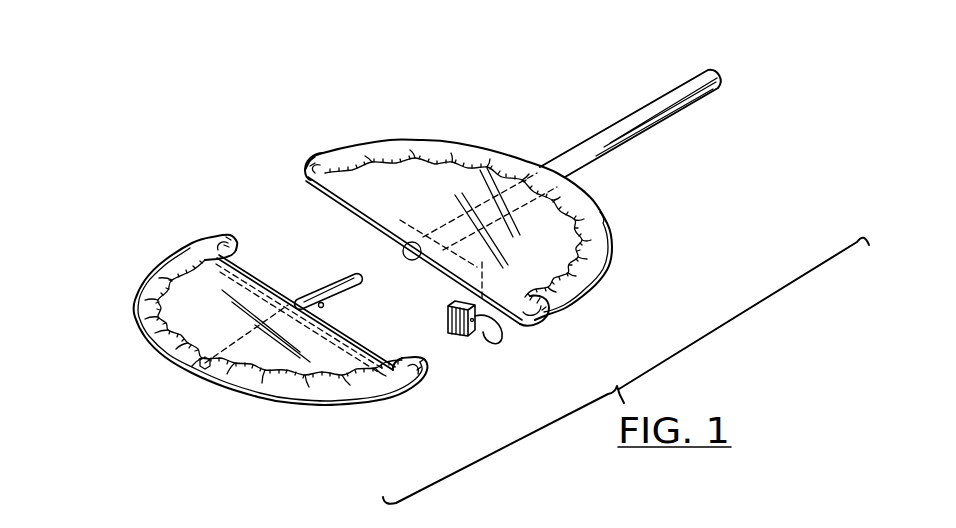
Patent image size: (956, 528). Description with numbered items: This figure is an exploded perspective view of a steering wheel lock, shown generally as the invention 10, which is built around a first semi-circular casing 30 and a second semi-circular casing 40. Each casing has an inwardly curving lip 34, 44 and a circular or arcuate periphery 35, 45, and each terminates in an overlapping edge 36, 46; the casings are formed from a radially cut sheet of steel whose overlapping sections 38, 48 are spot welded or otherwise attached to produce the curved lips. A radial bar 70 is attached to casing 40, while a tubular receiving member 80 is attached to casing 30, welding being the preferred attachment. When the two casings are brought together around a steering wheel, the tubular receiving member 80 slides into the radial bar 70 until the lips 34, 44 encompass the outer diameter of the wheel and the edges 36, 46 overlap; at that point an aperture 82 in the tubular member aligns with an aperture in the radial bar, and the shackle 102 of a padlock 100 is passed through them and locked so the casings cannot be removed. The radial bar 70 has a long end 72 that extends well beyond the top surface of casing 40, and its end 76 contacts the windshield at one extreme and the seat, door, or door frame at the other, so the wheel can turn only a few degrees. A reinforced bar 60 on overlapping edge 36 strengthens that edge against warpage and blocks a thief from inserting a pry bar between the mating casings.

The invention 10 is at (202, 193).
The first semi-circular casing 30 is at (203, 300).
The inwardly curving lip 34 is at (172, 368).
The arcuate periphery 35 is at (213, 390).
The overlapping edge 36 is at (243, 282).
The overlapping section 38 is at (326, 403).
The second semi-circular casing 40 is at (432, 180).
The inwardly curving lip 44 is at (582, 293).
The arcuate periphery 45 is at (474, 147).
The overlapping edge 46 is at (346, 212).
The overlapping section 48 is at (613, 258).
The reinforced bar 60 is at (345, 327).
The radial bar 70 is at (620, 117).
The long end 72 is at (693, 72).
The end 76 is at (717, 68).
The tubular receiving member 80 is at (343, 283).
The aperture 82 is at (319, 302).
The padlock 100 is at (457, 337).
The shackle 102 is at (505, 337).